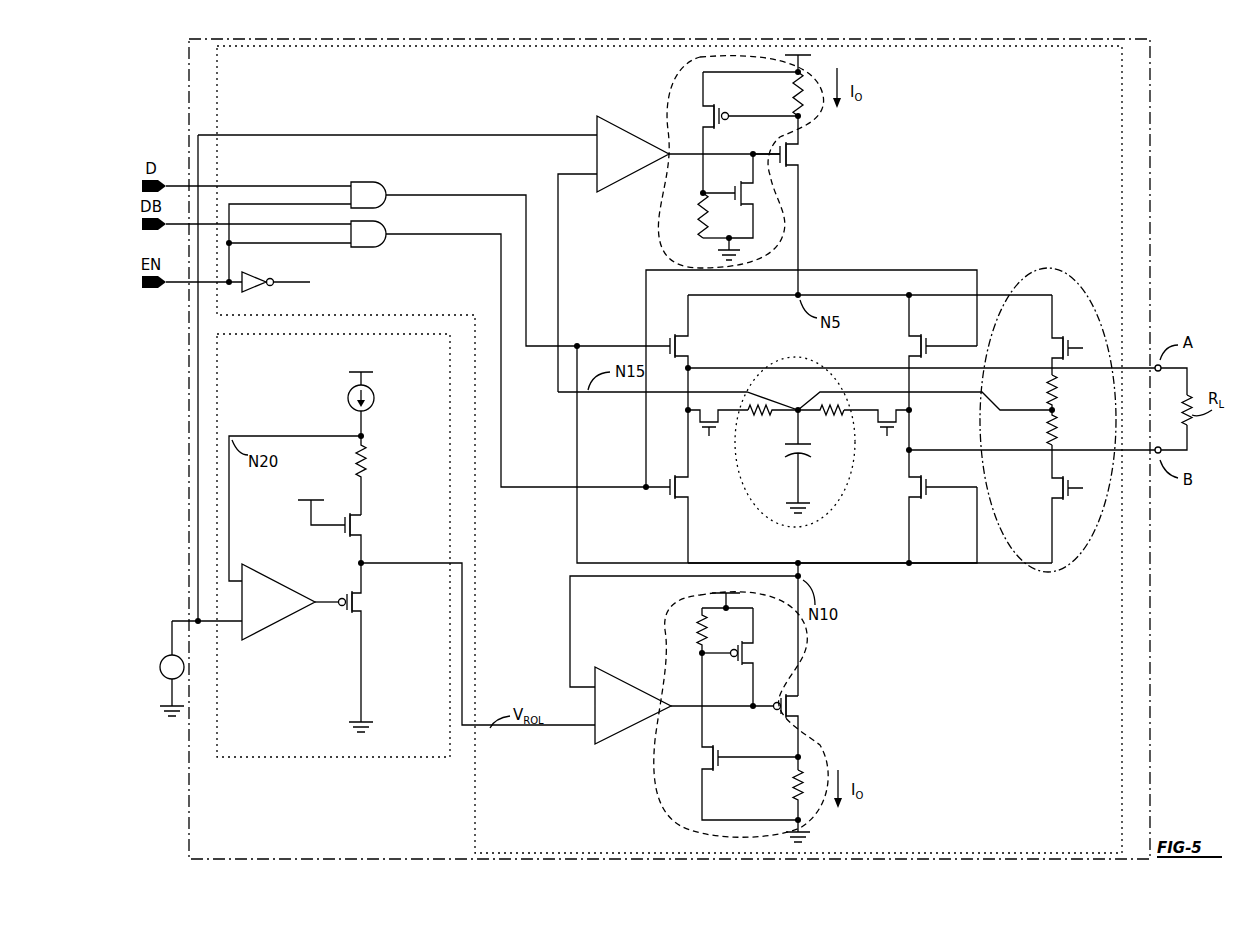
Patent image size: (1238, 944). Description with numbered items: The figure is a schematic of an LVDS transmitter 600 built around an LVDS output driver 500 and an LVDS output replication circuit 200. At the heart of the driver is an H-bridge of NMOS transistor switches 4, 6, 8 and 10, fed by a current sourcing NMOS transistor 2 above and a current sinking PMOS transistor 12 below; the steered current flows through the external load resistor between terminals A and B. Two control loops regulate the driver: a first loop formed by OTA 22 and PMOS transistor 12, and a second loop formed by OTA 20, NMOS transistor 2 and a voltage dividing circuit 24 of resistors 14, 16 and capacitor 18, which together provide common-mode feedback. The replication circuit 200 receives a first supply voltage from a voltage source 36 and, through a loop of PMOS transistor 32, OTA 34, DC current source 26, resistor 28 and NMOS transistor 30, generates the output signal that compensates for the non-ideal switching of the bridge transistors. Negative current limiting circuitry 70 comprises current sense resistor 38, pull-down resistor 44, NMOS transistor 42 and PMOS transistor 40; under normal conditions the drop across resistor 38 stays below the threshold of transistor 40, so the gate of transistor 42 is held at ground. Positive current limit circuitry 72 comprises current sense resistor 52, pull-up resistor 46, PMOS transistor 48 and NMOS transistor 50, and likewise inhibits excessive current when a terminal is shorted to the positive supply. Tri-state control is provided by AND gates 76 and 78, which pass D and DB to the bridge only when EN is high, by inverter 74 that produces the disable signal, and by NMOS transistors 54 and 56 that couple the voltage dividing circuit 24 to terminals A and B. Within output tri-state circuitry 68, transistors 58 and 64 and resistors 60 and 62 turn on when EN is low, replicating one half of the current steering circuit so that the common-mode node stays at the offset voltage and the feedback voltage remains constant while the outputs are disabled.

The NMOS transistor 2 is at (802, 148).
The NMOS transistor switch 4 is at (695, 340).
The NMOS transistor switch 6 is at (903, 341).
The NMOS transistor switch 8 is at (690, 497).
The NMOS transistor switch 10 is at (905, 497).
The PMOS transistor 12 is at (803, 697).
The resistor 14 is at (842, 416).
The resistor 16 is at (754, 416).
The capacitor 18 is at (811, 450).
The operational transconductance amplifier 20 is at (612, 117).
The operational transconductance amplifier 22 is at (616, 740).
The voltage dividing circuit 24 is at (818, 518).
The DC current source 26 is at (347, 398).
The resistor 28 is at (354, 462).
The NMOS transistor 30 is at (370, 535).
The PMOS transistor 32 is at (370, 612).
The operational transconductance amplifier 34 is at (262, 636).
The voltage source VROS 36 is at (155, 667).
The current sense resistor 38 is at (793, 96).
The PMOS transistor 40 is at (700, 110).
The NMOS transistor 42 is at (758, 187).
The pull-down resistor 44 is at (697, 220).
The pull-up resistor 46 is at (698, 628).
The PMOS transistor 48 is at (757, 650).
The NMOS transistor 50 is at (700, 752).
The current sense resistor 52 is at (790, 788).
The NMOS transistor 54 is at (703, 410).
The NMOS transistor 56 is at (893, 410).
The NMOS transistor 58 is at (1048, 341).
The resistor 60 is at (1058, 398).
The resistor 62 is at (1058, 435).
The NMOS transistor 64 is at (1048, 480).
The output tri-state circuitry 68 is at (1062, 576).
The negative current limiting circuitry 70 is at (785, 232).
The positive current limiting circuitry 72 is at (822, 770).
The inverter 74 is at (252, 268).
The AND gate 76 is at (372, 181).
The AND gate 78 is at (372, 250).
The LVDS output replication circuit 200 is at (297, 758).
The LVDS output driver 500 is at (1122, 82).
The LVDS transmitter 600 is at (930, 859).